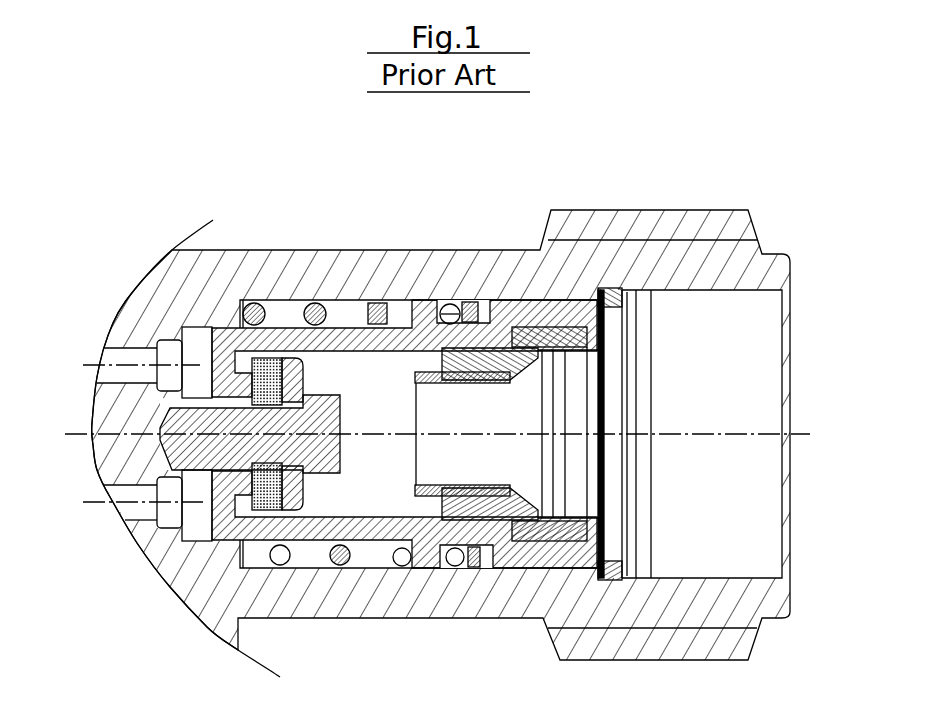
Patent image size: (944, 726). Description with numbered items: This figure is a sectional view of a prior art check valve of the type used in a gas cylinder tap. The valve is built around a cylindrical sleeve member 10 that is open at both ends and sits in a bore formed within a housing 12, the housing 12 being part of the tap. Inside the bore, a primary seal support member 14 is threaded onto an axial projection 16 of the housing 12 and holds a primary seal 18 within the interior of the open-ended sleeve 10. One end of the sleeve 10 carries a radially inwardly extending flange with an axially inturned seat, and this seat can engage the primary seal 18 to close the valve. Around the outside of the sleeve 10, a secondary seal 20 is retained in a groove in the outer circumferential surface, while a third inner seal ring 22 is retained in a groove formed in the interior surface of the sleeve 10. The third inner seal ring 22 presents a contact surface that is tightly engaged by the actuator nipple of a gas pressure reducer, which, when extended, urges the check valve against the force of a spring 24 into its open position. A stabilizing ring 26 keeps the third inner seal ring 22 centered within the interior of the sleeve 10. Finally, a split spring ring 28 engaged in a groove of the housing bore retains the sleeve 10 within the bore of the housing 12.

The cylindrical sleeve member 10 is at (310, 537).
The housing 12 is at (645, 222).
The primary seal support member 14 is at (330, 406).
The axial projection 16 is at (210, 466).
The primary seal 18 is at (303, 485).
The secondary seal 20 is at (448, 300).
The third inner seal ring 22 is at (620, 433).
The spring 24 is at (316, 302).
The stabilizing ring 26 is at (465, 386).
The split spring ring 28 is at (665, 537).